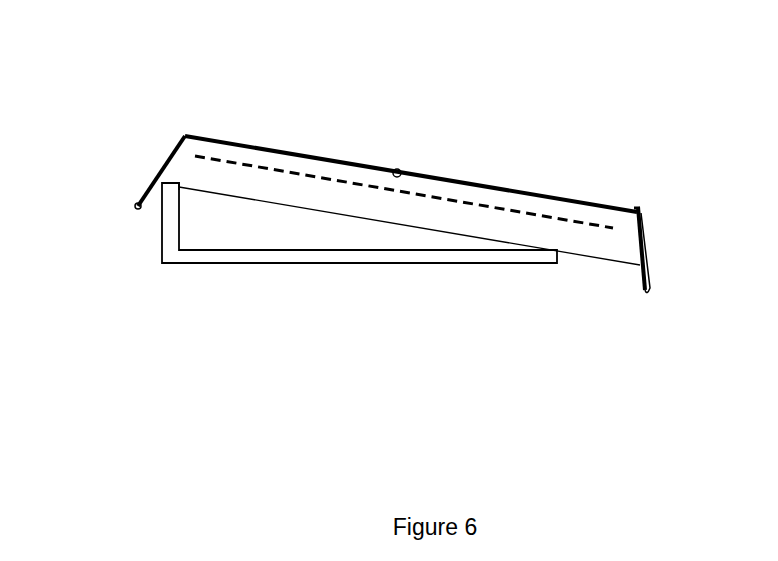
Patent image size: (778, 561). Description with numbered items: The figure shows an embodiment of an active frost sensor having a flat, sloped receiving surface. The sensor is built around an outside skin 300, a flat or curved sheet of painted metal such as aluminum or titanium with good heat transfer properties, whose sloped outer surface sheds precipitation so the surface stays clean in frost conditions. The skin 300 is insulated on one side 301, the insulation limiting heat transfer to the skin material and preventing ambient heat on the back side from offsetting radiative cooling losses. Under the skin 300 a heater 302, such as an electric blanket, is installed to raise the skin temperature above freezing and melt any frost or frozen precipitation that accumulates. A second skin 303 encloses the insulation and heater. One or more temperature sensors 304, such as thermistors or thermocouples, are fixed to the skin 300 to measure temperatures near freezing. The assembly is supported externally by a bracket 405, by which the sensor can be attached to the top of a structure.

The outside skin 300 is at (220, 135).
The insulated side 301 is at (213, 175).
The heater 302 is at (548, 215).
The second skin 303 is at (595, 258).
The temperature sensor 304 is at (402, 171).
The bracket 405 is at (350, 265).